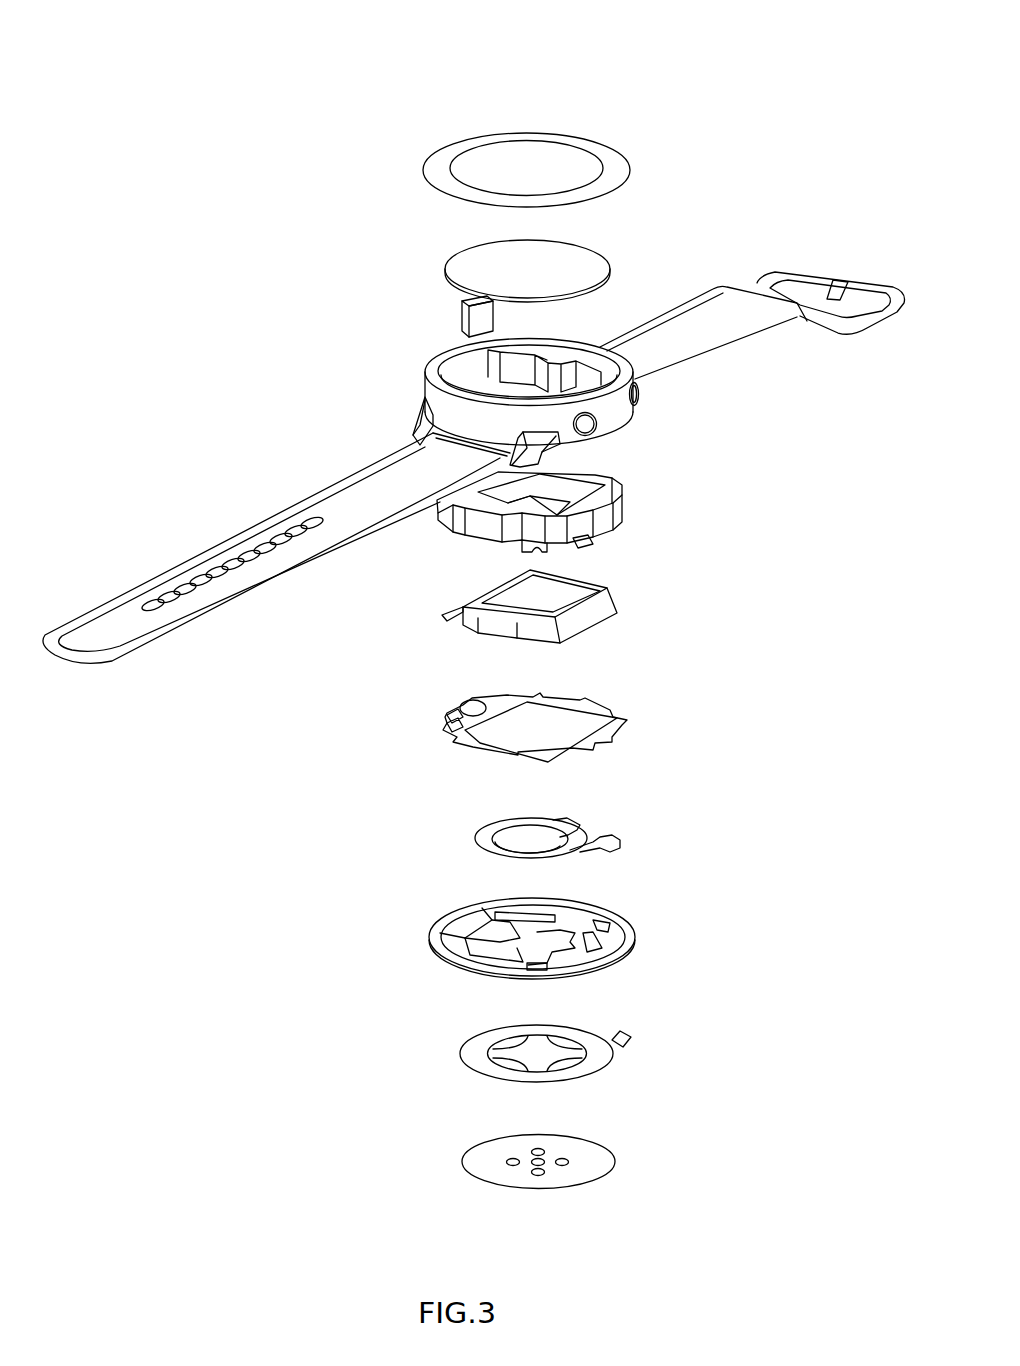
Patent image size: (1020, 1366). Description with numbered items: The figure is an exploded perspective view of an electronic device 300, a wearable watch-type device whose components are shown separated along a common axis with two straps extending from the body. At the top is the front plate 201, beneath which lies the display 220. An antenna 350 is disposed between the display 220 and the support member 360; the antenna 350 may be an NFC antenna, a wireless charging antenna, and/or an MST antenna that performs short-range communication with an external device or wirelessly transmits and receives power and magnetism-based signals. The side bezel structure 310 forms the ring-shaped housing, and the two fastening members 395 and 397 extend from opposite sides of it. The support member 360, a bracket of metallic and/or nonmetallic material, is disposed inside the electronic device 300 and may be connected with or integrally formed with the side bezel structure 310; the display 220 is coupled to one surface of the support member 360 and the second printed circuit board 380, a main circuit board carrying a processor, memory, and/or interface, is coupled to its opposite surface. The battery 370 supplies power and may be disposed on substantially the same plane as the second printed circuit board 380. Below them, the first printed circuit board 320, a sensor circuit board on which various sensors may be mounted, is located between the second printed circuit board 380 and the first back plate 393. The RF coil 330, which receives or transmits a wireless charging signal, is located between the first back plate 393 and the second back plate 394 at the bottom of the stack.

The electronic device 300 is at (162, 80).
The front plate 201 is at (582, 161).
The display 220 is at (457, 270).
The antenna 350 is at (466, 318).
The side bezel structure 310 is at (428, 378).
The fastening member 397 is at (690, 322).
The fastening member 395 is at (100, 625).
The support member 360 is at (588, 502).
The battery 370 is at (600, 598).
The second printed circuit board 380 is at (590, 730).
The first printed circuit board 320 is at (563, 827).
The first back plate 393 is at (608, 937).
The RF coil 330 is at (615, 1050).
The second back plate 394 is at (600, 1162).